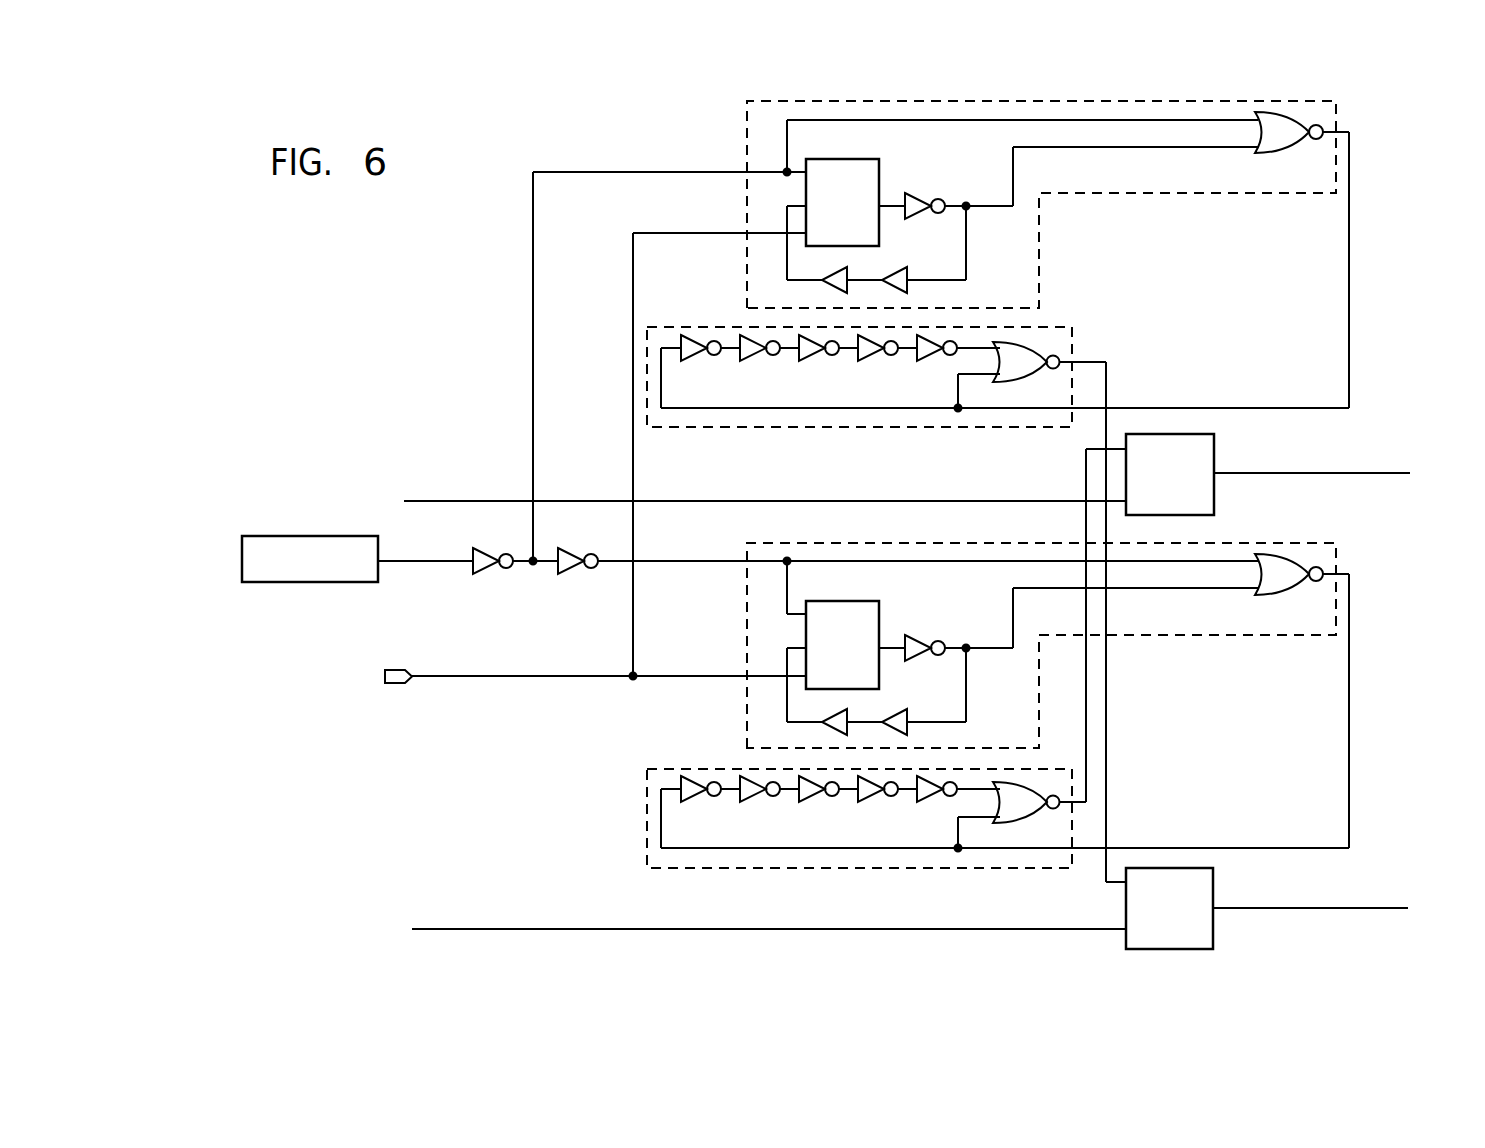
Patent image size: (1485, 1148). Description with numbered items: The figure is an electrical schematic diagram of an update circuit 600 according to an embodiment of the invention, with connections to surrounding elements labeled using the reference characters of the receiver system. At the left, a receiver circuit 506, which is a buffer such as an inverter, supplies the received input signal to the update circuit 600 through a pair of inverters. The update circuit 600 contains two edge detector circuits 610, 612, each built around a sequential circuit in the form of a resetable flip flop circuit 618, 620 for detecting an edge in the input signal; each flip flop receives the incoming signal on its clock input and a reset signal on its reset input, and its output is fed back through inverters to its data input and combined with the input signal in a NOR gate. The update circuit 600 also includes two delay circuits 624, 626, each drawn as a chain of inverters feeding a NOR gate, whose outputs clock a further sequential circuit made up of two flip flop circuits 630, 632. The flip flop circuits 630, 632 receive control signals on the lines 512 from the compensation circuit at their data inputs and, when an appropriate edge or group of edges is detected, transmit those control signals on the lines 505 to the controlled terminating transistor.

The update circuit 600 is at (466, 300).
The receiver circuit 506 is at (290, 536).
The lines 512 is at (427, 517).
The lines 505 is at (1322, 489).
The edge detector circuit 610 is at (1207, 193).
The edge detector circuit 612 is at (1207, 635).
The resetable flip flop circuit 618 is at (880, 173).
The resetable flip flop circuit 620 is at (880, 615).
The delay circuit 624 is at (727, 427).
The delay circuit 626 is at (727, 868).
The flip flop circuit 630 is at (1214, 444).
The flip flop circuit 632 is at (1213, 879).